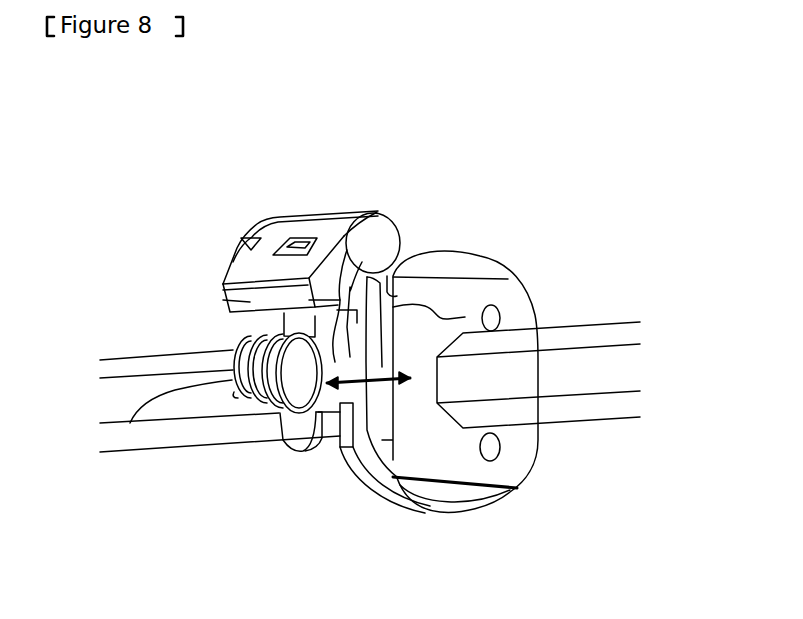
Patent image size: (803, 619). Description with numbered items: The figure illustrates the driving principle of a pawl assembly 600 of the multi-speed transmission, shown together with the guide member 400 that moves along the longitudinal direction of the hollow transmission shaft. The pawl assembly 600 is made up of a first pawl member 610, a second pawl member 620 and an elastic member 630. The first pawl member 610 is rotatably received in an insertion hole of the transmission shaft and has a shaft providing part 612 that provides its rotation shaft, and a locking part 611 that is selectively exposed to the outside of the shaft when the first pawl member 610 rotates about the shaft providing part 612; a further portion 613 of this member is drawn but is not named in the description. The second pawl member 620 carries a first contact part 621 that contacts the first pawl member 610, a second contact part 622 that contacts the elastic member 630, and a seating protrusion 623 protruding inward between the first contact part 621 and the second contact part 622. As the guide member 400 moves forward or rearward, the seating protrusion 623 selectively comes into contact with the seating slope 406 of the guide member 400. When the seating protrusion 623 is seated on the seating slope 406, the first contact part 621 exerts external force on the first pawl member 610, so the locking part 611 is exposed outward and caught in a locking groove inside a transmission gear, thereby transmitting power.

The guide member 400 is at (478, 259).
The seating slope 406 is at (340, 428).
The pawl assembly 600 is at (200, 212).
The first pawl member 610 is at (303, 232).
The locking part 611 is at (217, 300).
The shaft providing part 612 is at (370, 215).
The slot 613 is at (290, 242).
The second pawl member 620 is at (203, 437).
The first contact part 621 is at (262, 318).
The second contact part 622 is at (288, 433).
The seating protrusion 623 is at (323, 347).
The elastic member 630 is at (130, 423).